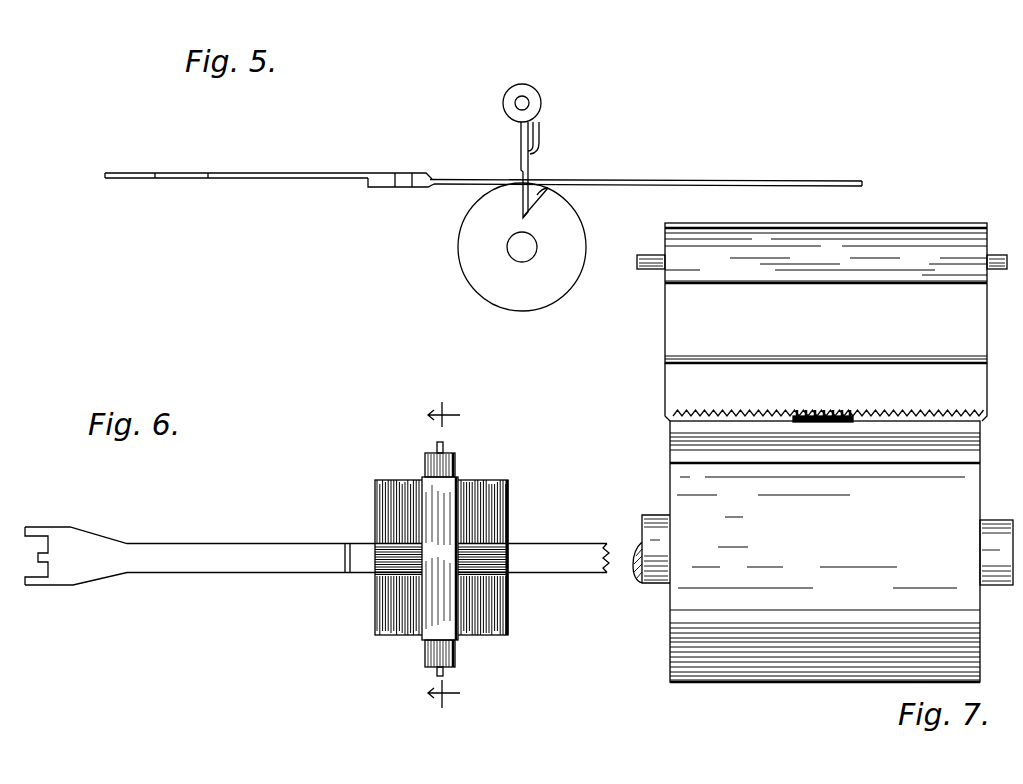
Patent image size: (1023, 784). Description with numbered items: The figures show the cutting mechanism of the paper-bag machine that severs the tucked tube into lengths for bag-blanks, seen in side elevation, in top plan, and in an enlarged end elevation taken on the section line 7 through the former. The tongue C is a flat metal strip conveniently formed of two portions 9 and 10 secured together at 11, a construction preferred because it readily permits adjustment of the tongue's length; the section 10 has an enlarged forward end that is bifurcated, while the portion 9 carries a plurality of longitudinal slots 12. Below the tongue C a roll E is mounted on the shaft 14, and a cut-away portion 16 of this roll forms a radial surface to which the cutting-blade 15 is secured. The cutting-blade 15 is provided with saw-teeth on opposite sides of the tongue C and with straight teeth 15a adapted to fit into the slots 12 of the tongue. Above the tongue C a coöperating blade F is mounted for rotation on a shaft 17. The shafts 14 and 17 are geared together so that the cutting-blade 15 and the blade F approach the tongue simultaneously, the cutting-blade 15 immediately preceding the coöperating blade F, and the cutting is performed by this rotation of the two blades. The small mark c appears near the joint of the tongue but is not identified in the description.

In FIG. 5, the portion of tongue 9 is at (638, 180).
In FIG. 6, the portion of tongue 9 is at (555, 553).
In FIG. 7, the portion of tongue 9 is at (797, 422).
In FIG. 5, the section of tongue 10 is at (260, 177).
In FIG. 6, the section of tongue 10 is at (220, 548).
In FIG. 5, the securing point 11 is at (388, 183).
In FIG. 6, the securing point 11 is at (348, 542).
In FIG. 6, the longitudinal slots 12 is at (383, 572).
In FIG. 5, the shaft 14 is at (530, 253).
In FIG. 6, the shaft 14 is at (458, 465).
In FIG. 7, the shaft 14 is at (650, 516).
In FIG. 5, the cutting-blade 15 is at (518, 207).
In FIG. 7, the cutting-blade 15 is at (683, 427).
In FIG. 7, the straight teeth 15a is at (840, 413).
In FIG. 5, the cut-away portion 16 is at (548, 190).
In FIG. 6, the cut-away portion 16 is at (465, 630).
In FIG. 5, the shaft 17 is at (529, 103).
In FIG. 6, the shaft 17 is at (445, 445).
In FIG. 7, the shaft 17 is at (652, 269).
In FIG. 6, the section line 7- 7 is at (444, 554).
In FIG. 5, the tongue C is at (470, 153).
In FIG. 5, the clip c is at (392, 187).
In FIG. 5, the roll E is at (573, 224).
In FIG. 6, the roll E is at (495, 498).
In FIG. 7, the roll E is at (677, 463).
In FIG. 5, the coöperating blade F is at (528, 158).
In FIG. 7, the coöperating blade F is at (677, 373).